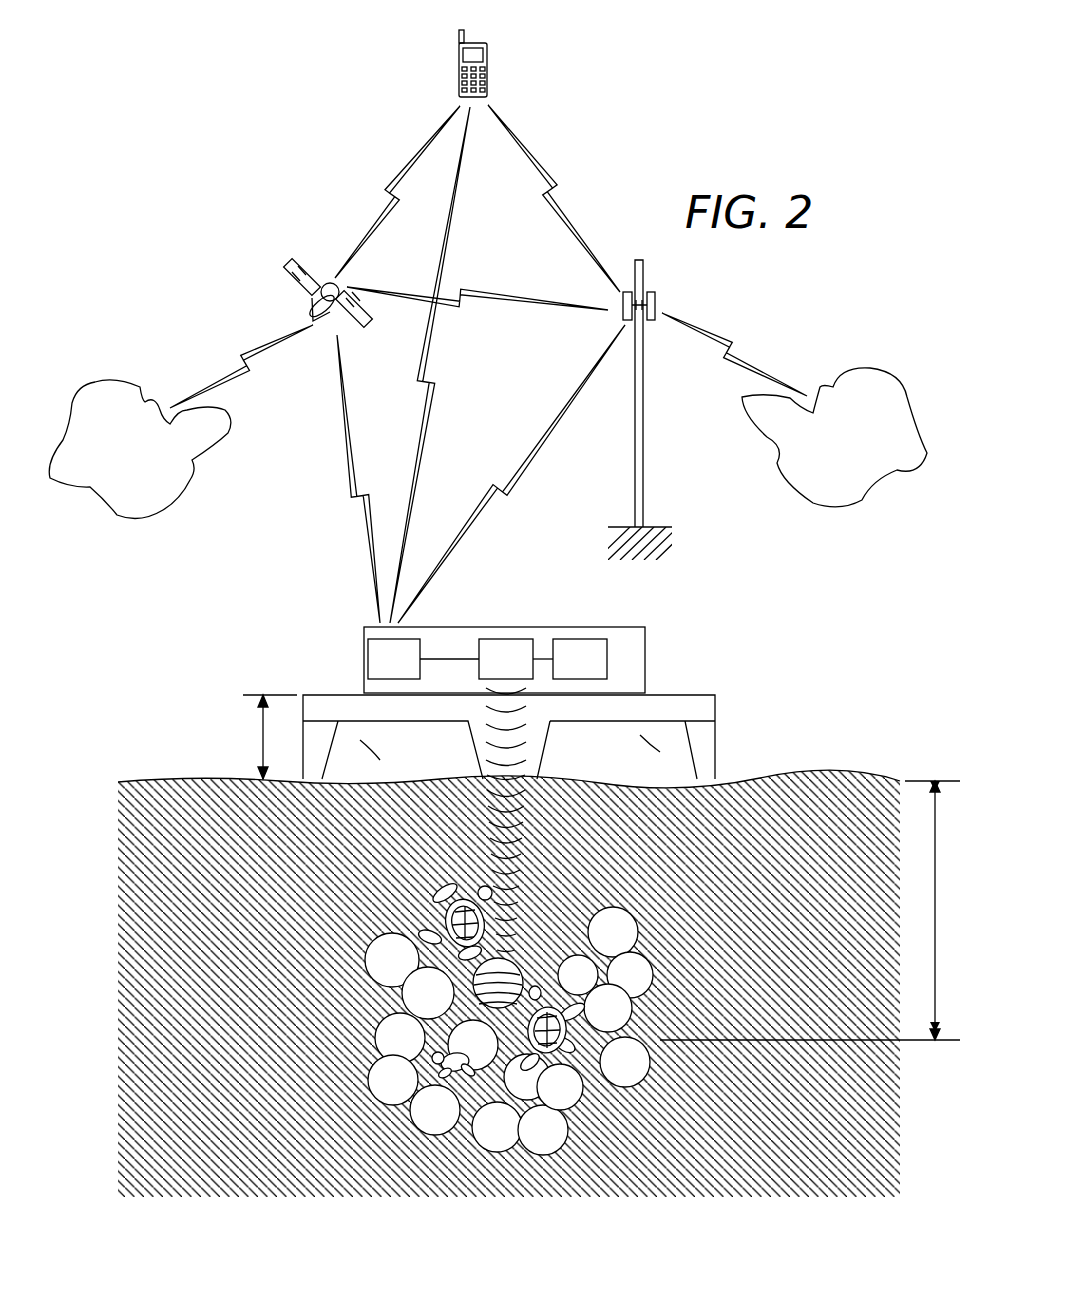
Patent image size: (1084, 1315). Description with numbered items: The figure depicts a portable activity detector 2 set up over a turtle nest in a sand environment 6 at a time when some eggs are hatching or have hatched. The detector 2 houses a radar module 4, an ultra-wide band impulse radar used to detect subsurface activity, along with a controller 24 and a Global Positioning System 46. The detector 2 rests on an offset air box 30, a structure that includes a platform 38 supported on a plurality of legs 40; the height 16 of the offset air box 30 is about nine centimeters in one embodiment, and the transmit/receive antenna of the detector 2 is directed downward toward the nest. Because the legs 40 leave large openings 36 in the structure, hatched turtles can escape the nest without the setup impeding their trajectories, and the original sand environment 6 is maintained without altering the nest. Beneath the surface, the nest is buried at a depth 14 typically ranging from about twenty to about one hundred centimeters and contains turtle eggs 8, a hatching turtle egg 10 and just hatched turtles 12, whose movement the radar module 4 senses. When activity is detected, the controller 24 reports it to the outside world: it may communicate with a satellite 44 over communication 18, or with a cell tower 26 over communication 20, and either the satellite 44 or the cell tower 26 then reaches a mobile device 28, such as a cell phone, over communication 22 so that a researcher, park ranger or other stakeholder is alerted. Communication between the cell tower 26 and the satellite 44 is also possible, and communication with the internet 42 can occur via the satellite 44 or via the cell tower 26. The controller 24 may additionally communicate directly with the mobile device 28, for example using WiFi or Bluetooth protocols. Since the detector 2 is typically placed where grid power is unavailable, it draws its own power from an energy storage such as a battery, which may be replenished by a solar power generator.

The activity detector 2 is at (504, 683).
The radar module 4 is at (514, 677).
The medium, e.g., sand environment 6 is at (738, 780).
The turtle egg 8 is at (500, 1137).
The hatching turtle egg 10 is at (467, 1094).
The just hatched turtle 12 is at (465, 898).
The depth of turtle nest 14 is at (951, 929).
The height of offset air box 16 is at (276, 754).
The communication between satellite and controller 18 is at (345, 397).
The communication between cell tower and controller 20 is at (553, 420).
The communication between satellite or cell tower and mobile device 22 is at (388, 183).
The controller 24 is at (409, 677).
The cell tower 26 is at (634, 483).
The mobile device, e.g., cell phone 28 is at (485, 43).
The offset air box 30 is at (554, 706).
The opening 36 is at (376, 735).
The platform 38 is at (660, 695).
The leg 40 is at (333, 762).
The internet 42 is at (154, 501).
The satellite 44 is at (296, 270).
The Global Positioning System 46 is at (596, 677).